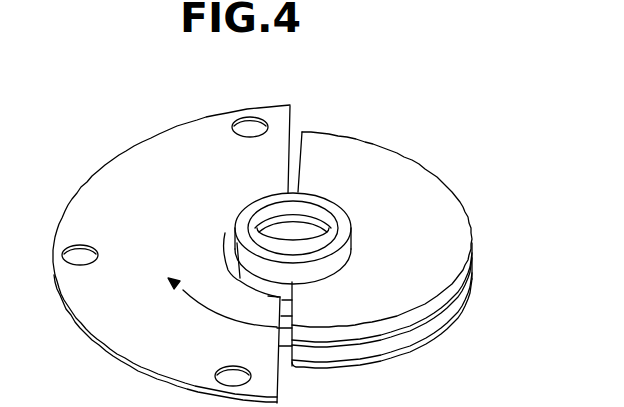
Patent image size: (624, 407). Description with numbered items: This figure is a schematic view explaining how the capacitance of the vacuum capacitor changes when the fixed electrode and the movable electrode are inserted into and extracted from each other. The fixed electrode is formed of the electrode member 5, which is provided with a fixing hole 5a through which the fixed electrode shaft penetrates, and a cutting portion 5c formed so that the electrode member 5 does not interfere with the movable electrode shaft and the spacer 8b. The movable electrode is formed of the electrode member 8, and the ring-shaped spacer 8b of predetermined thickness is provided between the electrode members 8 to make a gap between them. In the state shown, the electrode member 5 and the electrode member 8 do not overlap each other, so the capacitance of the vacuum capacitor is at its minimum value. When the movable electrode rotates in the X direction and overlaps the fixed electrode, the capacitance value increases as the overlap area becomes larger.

The electrode member 5 is at (143, 167).
The fixing hole 5a is at (248, 127).
The cutting portion 5c is at (230, 247).
The electrode member 8 is at (380, 157).
The spacer 8b is at (343, 222).
The X direction X is at (410, 288).